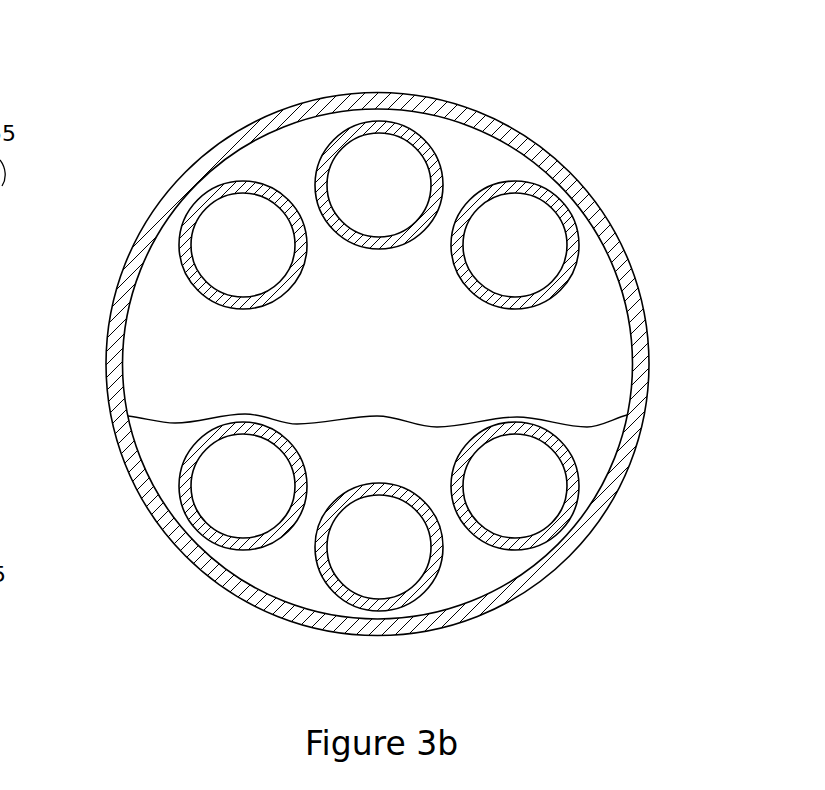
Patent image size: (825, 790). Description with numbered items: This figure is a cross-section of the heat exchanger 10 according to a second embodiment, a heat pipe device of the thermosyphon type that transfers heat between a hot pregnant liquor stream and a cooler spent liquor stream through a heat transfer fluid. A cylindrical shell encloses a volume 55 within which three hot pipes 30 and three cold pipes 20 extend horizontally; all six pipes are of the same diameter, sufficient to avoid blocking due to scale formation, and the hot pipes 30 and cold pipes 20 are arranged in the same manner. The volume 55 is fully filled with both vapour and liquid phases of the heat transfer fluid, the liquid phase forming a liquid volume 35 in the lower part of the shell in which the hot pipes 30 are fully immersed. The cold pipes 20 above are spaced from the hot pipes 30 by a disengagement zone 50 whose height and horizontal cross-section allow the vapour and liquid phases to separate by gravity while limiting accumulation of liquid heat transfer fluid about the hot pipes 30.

The heat exchanger 10 is at (665, 292).
The volume 55 is at (590, 293).
The cold pipes 20 is at (507, 245).
The hot pipes 30 is at (420, 593).
The liquid volume 35 is at (588, 445).
The disengagement zone 50 is at (377, 363).